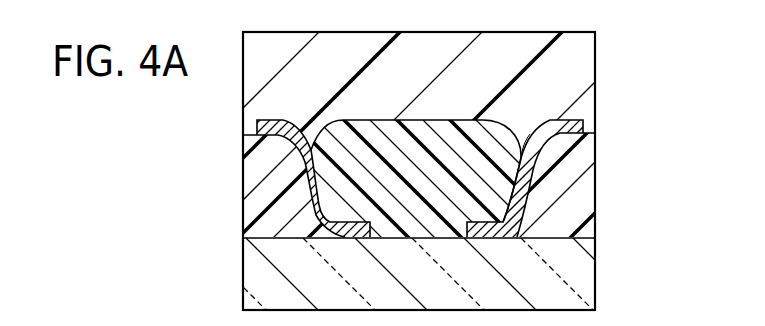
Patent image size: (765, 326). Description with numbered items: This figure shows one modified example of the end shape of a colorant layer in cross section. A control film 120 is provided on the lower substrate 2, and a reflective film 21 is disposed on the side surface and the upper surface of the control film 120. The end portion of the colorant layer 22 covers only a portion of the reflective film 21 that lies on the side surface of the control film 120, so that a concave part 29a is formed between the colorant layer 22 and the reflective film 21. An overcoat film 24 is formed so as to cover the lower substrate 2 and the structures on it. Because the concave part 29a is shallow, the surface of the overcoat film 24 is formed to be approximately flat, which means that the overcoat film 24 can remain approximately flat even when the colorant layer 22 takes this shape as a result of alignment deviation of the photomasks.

The lower substrate 2 is at (580, 283).
The control film 120 is at (583, 193).
The overcoat film 24 is at (582, 68).
The reflective film 21 is at (583, 128).
The colorant layer 22 is at (382, 138).
The concave part 29a is at (520, 112).